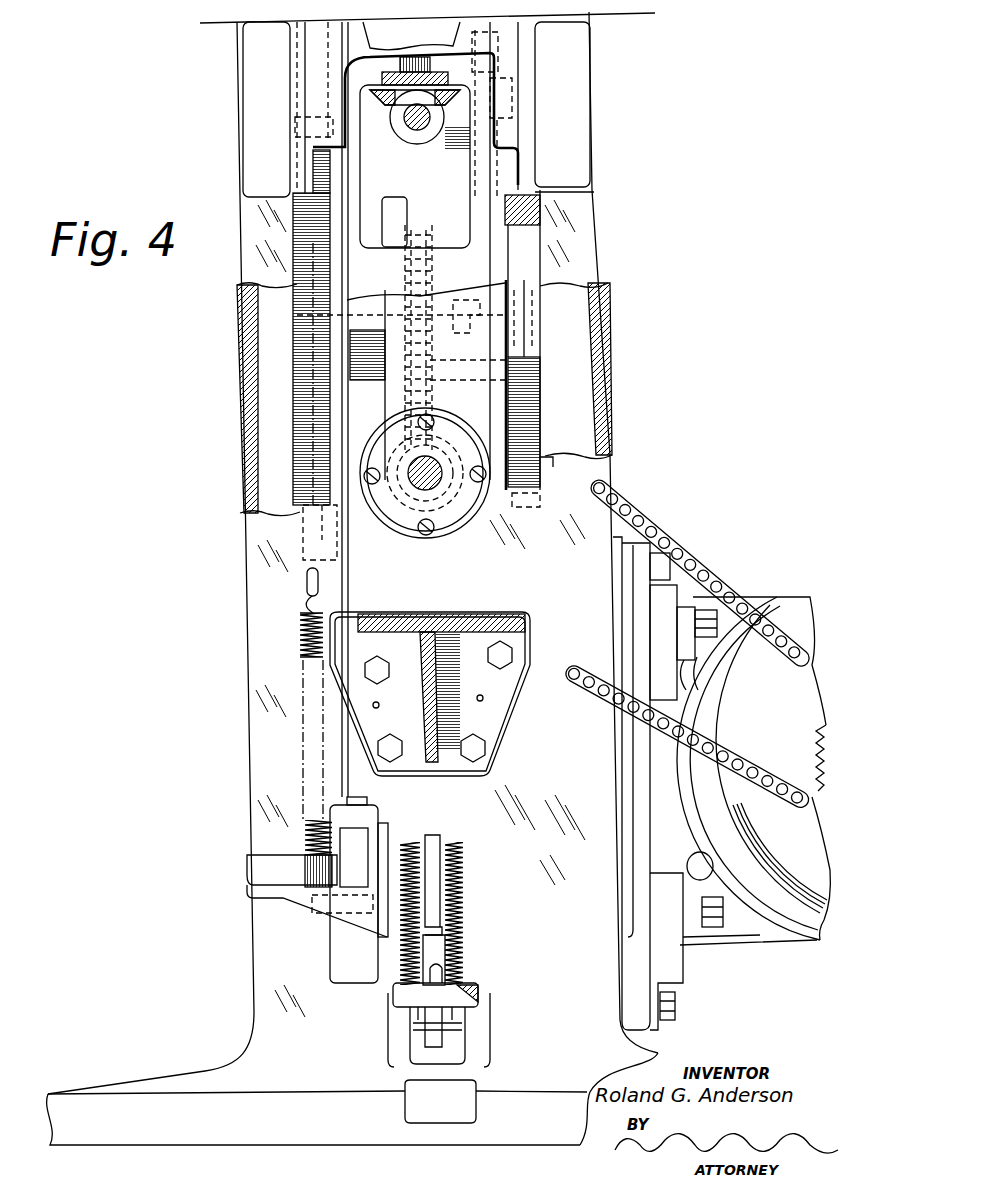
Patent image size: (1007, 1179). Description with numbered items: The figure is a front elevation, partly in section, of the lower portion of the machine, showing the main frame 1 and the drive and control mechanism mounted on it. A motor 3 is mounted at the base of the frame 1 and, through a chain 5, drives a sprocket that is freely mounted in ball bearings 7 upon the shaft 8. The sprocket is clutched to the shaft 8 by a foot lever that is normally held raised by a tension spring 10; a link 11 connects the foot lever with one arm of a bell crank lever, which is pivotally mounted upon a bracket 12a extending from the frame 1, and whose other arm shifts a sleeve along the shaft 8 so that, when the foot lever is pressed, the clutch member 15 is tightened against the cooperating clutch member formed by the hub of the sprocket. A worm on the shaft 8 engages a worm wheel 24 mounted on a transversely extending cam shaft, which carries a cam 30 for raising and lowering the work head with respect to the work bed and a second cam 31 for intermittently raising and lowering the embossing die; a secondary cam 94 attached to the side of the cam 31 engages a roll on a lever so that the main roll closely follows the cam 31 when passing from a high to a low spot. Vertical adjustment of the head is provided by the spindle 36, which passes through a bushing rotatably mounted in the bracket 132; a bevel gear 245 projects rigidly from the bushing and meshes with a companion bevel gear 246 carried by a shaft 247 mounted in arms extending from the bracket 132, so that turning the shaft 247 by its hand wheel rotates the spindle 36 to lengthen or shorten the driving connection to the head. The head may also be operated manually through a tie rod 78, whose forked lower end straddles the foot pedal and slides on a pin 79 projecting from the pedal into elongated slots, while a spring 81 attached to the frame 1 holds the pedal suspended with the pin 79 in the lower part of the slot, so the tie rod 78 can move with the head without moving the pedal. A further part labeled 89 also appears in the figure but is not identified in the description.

The main frame 1 is at (595, 272).
The motor 3 is at (753, 771).
The chain 5 is at (693, 560).
The ball bearings 7 is at (207, 1072).
The shaft 8 is at (437, 473).
The tension spring 10 is at (462, 912).
The link 11 is at (430, 837).
The bracket 12a is at (517, 660).
The clutch member 15 is at (453, 525).
The worm wheel 24 is at (440, 413).
The cam 30 is at (307, 460).
The second cam 31 is at (530, 437).
The spindle 36 is at (432, 63).
The tie rod 78 is at (347, 600).
The pin 79 is at (365, 910).
The spring 81 is at (300, 645).
The plate 89 is at (386, 210).
The secondary cam 94 is at (538, 262).
The bracket 132 is at (411, 36).
The bevel gear 245 is at (384, 98).
The companion bevel gear 246 is at (400, 134).
The shaft 247 is at (418, 130).